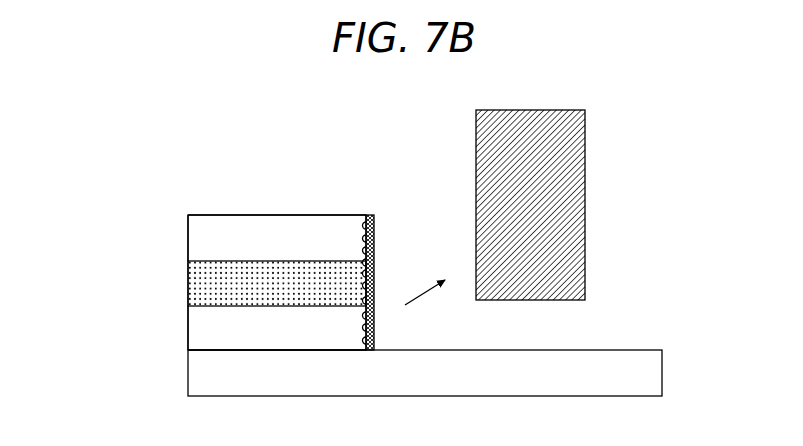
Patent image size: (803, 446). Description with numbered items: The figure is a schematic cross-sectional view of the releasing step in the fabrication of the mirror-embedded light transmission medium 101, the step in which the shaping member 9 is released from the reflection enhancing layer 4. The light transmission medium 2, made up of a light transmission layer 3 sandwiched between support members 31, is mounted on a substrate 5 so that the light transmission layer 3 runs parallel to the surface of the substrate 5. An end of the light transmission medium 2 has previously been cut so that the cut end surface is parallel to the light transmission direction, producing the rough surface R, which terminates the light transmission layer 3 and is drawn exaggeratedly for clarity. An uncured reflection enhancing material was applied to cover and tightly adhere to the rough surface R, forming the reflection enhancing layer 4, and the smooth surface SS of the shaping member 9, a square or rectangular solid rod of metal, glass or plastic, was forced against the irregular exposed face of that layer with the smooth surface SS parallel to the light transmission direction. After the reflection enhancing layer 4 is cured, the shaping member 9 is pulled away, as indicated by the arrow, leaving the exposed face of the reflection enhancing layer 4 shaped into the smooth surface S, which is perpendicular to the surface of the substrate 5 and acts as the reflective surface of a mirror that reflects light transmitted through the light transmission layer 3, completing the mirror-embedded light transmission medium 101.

The mirror-embedded light transmission medium 101 is at (170, 171).
The light transmission medium 2 is at (128, 215).
The light transmission layer 3 is at (196, 281).
The support member 31 is at (196, 237).
The reflection enhancing layer 4 is at (368, 215).
The substrate 5 is at (190, 372).
The shaping member 9 is at (585, 143).
The rough surface R is at (361, 255).
The smooth surface S is at (376, 250).
The smooth surface of shaping member SS is at (476, 156).